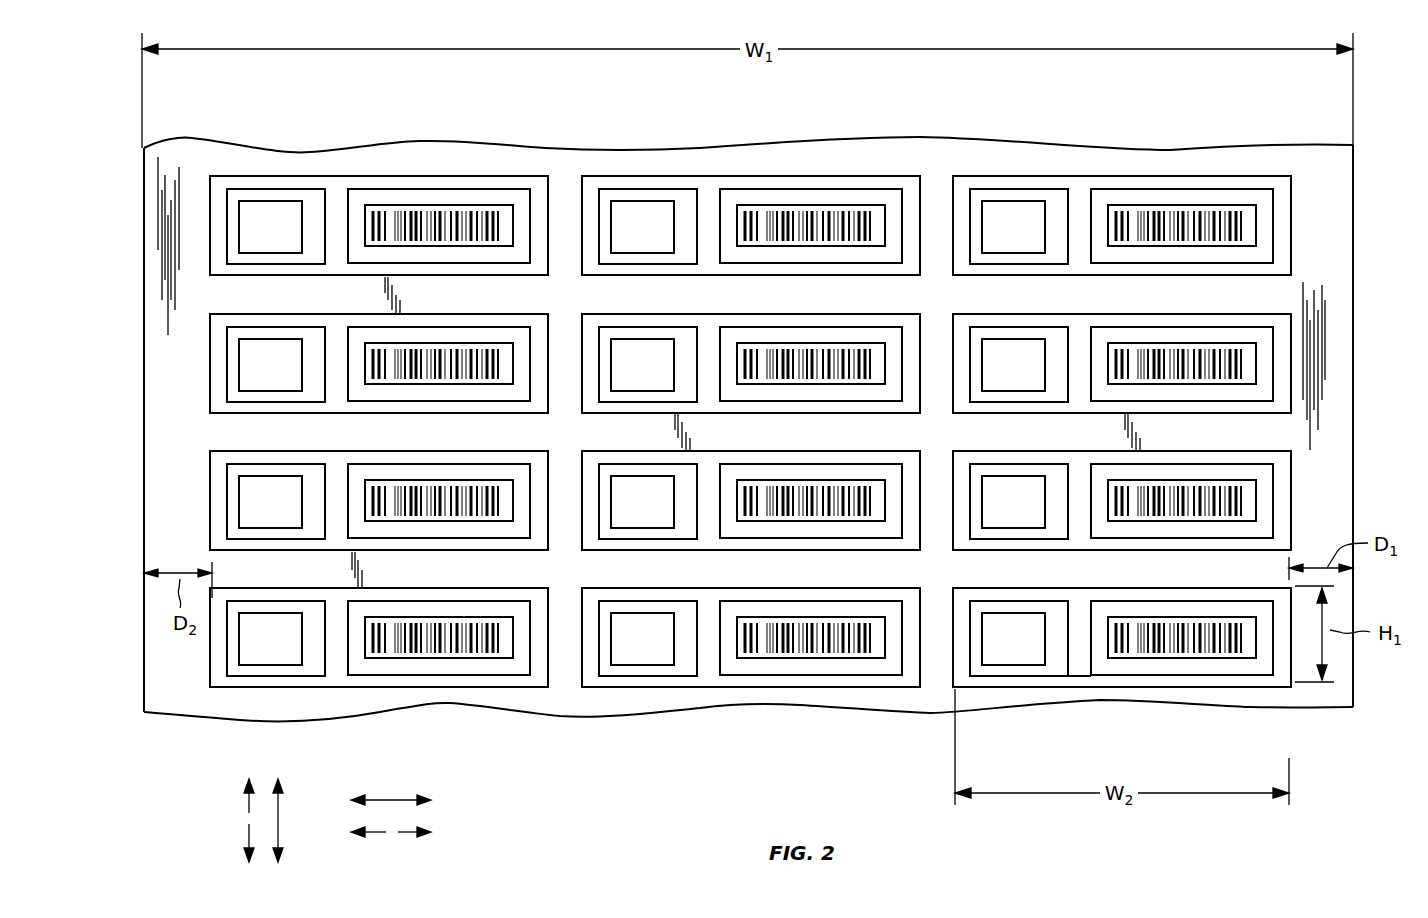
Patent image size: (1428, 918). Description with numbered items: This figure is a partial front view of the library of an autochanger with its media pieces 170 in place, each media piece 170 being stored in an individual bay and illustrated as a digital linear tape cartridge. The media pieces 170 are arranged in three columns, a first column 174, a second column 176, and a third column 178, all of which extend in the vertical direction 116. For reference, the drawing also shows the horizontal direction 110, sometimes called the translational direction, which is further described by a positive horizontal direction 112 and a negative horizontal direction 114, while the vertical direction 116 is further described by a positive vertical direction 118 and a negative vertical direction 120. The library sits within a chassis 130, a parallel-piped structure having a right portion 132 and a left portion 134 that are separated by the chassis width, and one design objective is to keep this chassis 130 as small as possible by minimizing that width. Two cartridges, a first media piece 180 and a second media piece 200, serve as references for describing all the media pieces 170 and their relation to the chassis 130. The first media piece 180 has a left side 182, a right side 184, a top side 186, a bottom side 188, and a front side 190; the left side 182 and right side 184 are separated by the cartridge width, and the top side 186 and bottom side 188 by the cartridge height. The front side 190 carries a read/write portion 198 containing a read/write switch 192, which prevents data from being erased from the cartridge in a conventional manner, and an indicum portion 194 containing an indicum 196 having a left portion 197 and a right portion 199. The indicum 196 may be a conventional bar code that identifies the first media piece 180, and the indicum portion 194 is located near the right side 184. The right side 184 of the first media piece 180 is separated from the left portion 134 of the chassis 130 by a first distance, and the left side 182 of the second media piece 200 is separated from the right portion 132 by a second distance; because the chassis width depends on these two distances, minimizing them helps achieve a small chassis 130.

The horizontal direction 110 is at (383, 799).
The positive horizontal direction 112 is at (405, 834).
The negative horizontal direction 114 is at (376, 834).
The vertical direction 116 is at (279, 815).
The positive vertical direction 118 is at (247, 804).
The negative vertical direction 120 is at (247, 834).
The chassis 130 is at (1362, 195).
The right portion 132 is at (144, 357).
The left portion 134 is at (1353, 316).
The media pieces 170 is at (597, 180).
The first column 174 is at (391, 150).
The second column 176 is at (758, 150).
The third column 178 is at (1128, 150).
The first media piece 180 is at (1145, 659).
The left side 182 is at (210, 663).
The right side 184 is at (1298, 672).
The top side 186 is at (1243, 587).
The bottom side 188 is at (1235, 688).
The front side 190 is at (1078, 672).
The read/write switch 192 is at (992, 655).
The indicum portion 194 is at (1193, 676).
The indicum 196 is at (1157, 658).
The left portion 197 is at (1091, 615).
The read/write portion 198 is at (1030, 676).
The right portion 199 is at (1273, 655).
The second media piece 200 is at (447, 696).